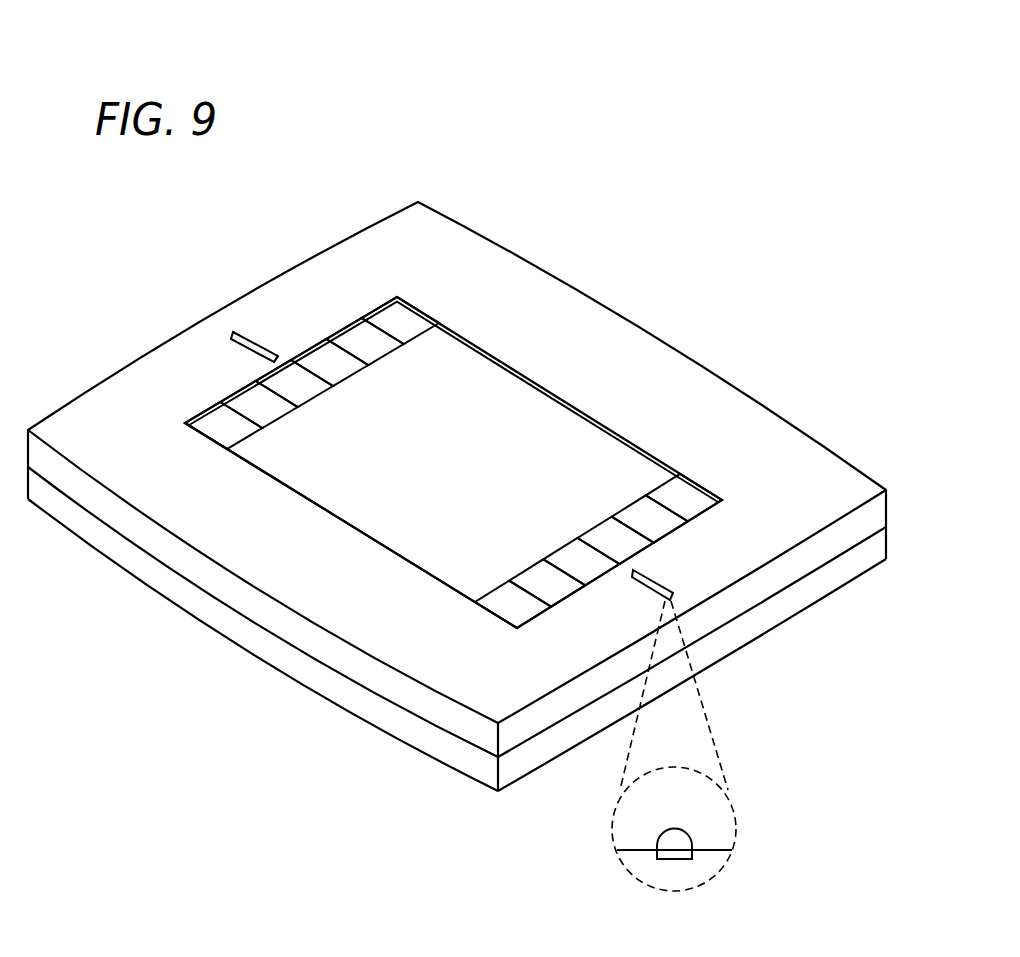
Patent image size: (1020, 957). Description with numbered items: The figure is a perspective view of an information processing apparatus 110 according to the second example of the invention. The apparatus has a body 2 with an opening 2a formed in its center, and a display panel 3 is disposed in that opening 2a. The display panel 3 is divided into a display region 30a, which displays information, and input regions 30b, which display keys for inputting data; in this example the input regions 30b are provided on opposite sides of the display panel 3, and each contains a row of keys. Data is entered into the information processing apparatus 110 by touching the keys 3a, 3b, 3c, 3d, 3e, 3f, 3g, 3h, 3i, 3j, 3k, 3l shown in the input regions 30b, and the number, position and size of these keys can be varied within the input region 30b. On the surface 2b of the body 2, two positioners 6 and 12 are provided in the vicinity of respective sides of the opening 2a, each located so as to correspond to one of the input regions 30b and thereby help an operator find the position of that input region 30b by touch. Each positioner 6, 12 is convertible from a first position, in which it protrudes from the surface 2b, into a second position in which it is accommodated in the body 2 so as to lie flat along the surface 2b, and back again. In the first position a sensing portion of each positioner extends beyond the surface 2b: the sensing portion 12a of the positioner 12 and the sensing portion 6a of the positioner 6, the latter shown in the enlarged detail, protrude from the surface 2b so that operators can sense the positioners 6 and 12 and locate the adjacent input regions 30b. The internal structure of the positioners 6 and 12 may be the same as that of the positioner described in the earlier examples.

The information processing apparatus 110 is at (457, 494).
The body 2 is at (657, 360).
The opening 2a is at (558, 393).
The surface 2b is at (710, 388).
The display panel 3 is at (495, 387).
The key 3a is at (669, 489).
The key 3b is at (635, 510).
The key 3c is at (601, 531).
The key 3d is at (566, 553).
The key 3e is at (532, 574).
The key 3f is at (498, 595).
The key 3g is at (415, 330).
The key 3h is at (380, 350).
The key 3i is at (345, 371).
The key 3j is at (309, 392).
The key 3k is at (274, 413).
The key 3l is at (239, 434).
The display region 30a is at (367, 507).
The input region 30b is at (207, 442).
The positioner 12 is at (240, 325).
The sensing portion 12a is at (255, 347).
The positioner 6 is at (682, 598).
The sensing portion 6a is at (648, 585).